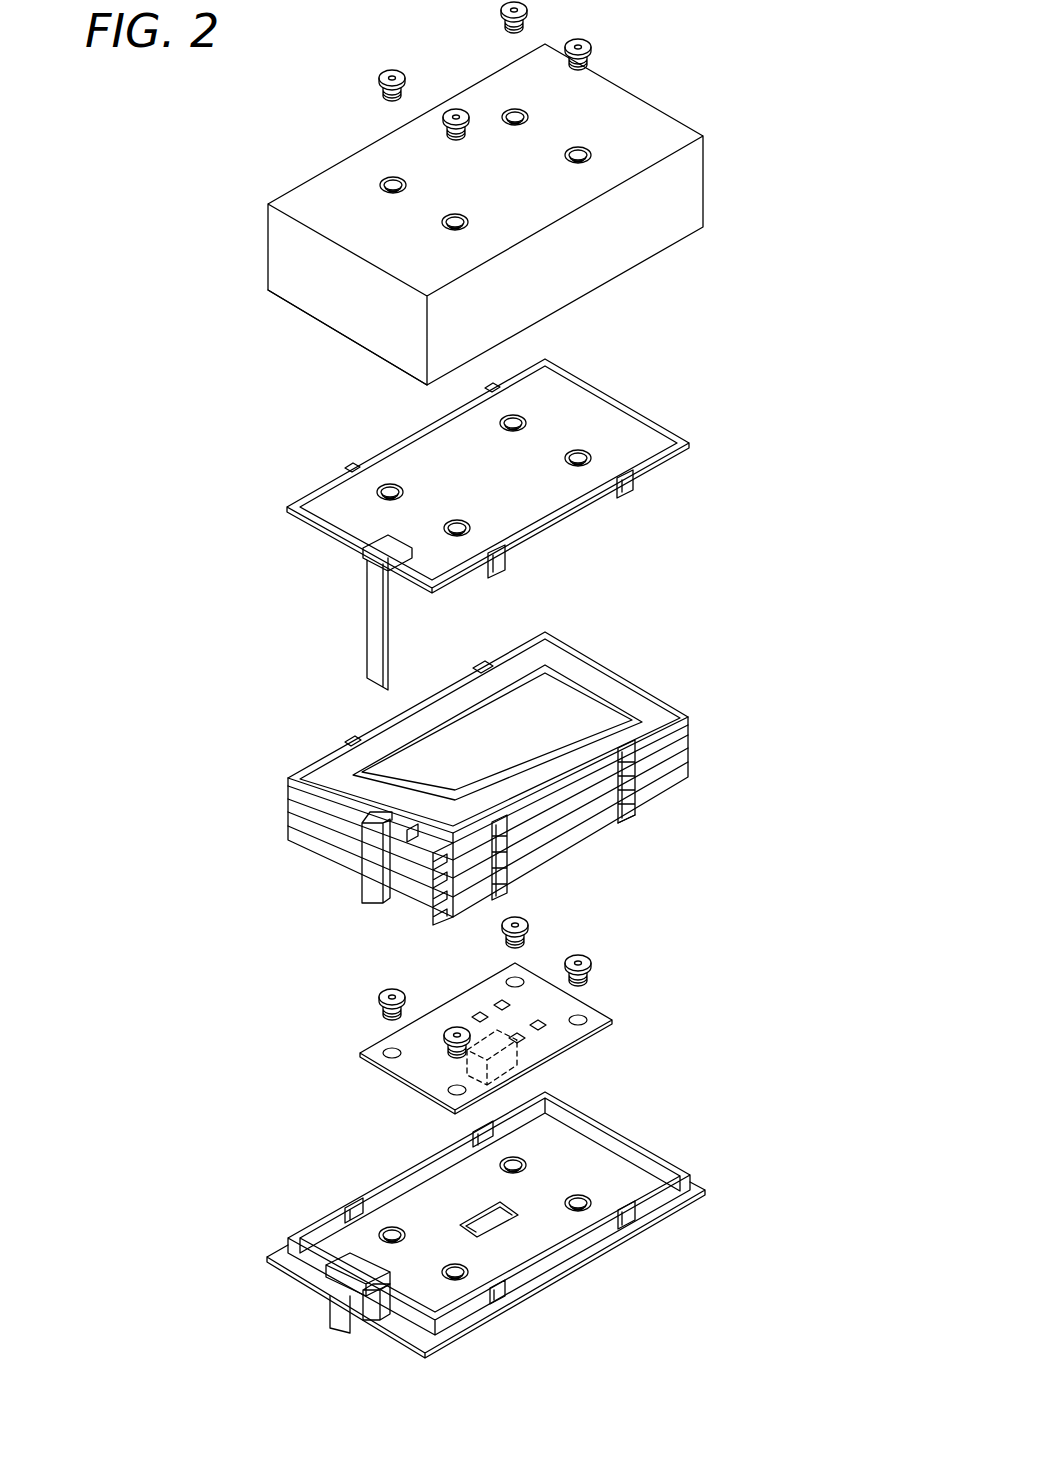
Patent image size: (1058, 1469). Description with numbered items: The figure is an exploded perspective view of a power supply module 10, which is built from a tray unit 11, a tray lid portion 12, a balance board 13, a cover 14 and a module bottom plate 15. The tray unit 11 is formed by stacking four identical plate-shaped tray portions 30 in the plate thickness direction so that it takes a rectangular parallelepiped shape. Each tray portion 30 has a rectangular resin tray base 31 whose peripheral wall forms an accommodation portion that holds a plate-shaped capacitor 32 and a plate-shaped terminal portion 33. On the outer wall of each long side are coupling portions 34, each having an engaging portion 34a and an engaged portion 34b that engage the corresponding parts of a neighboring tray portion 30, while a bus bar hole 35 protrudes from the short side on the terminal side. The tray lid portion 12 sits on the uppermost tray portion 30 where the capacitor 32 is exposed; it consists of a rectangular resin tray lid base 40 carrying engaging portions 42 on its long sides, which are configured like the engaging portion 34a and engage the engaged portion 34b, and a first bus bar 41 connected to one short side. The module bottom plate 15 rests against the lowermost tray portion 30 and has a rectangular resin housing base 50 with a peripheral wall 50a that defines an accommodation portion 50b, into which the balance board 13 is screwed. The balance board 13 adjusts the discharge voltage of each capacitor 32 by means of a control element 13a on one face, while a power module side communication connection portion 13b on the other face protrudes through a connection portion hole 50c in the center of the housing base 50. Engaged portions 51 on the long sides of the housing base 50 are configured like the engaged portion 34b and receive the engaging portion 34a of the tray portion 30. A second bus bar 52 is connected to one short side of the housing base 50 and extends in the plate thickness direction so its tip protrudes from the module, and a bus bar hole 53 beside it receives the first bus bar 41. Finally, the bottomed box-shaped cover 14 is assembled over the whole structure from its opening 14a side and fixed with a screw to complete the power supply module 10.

The power supply module 10 is at (838, 96).
The tray unit 11 is at (649, 628).
The tray lid portion 12 is at (692, 335).
The balance board 13 is at (634, 976).
The control element 13a is at (545, 1027).
The power module side communication connection portion 13b is at (508, 1087).
The cover 14 is at (665, 220).
The opening 14a is at (320, 333).
The module bottom plate 15 is at (672, 1102).
The tray portion 30 is at (287, 836).
The tray base 31 is at (688, 714).
The capacitor 32 is at (597, 717).
The terminal portion 33 is at (423, 843).
The coupling portion 34 is at (743, 807).
The engaging portion 34a is at (628, 822).
The engaged portion 34b is at (638, 757).
The bus bar hole 35 is at (377, 840).
The tray lid base 40 is at (538, 505).
The first bus bar 41 is at (367, 617).
The engaging portion 42 is at (633, 497).
The housing base 50 is at (275, 1267).
The peripheral wall 50a is at (460, 1317).
The accommodation portion 50b is at (517, 1252).
The connection portion hole 50c is at (493, 1212).
The engaged portion 51 is at (625, 1242).
The second bus bar 52 is at (332, 1317).
The bus bar hole 53 is at (377, 1300).